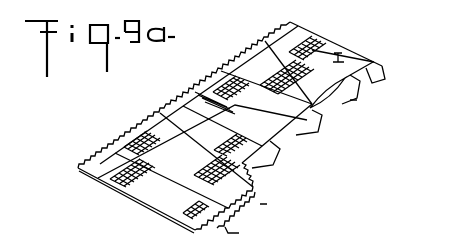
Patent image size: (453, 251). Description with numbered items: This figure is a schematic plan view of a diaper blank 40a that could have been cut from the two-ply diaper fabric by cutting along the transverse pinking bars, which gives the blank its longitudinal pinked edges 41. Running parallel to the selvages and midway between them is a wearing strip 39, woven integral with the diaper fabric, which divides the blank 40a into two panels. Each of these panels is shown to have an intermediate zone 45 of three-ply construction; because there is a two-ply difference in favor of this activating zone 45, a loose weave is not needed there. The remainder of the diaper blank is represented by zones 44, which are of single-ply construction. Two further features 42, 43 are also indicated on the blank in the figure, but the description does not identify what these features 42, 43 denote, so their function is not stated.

The wearing strip 39 is at (221, 70).
The diaper blank 40a is at (148, 188).
The longitudinal pinked edges 41 is at (223, 67).
The adhesive area 42 is at (336, 52).
The slit 43 is at (344, 57).
The zones 44 is at (384, 79).
The intermediate zone 45 is at (357, 100).